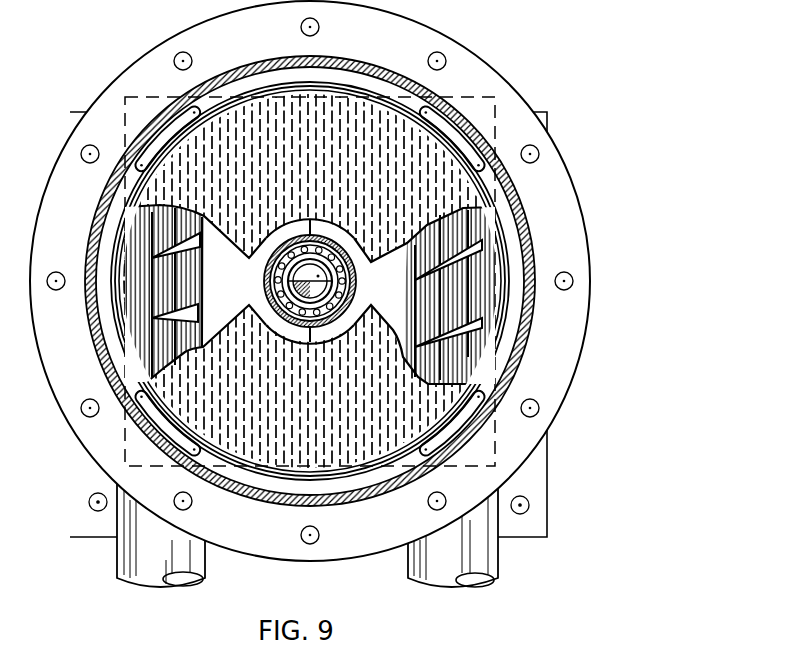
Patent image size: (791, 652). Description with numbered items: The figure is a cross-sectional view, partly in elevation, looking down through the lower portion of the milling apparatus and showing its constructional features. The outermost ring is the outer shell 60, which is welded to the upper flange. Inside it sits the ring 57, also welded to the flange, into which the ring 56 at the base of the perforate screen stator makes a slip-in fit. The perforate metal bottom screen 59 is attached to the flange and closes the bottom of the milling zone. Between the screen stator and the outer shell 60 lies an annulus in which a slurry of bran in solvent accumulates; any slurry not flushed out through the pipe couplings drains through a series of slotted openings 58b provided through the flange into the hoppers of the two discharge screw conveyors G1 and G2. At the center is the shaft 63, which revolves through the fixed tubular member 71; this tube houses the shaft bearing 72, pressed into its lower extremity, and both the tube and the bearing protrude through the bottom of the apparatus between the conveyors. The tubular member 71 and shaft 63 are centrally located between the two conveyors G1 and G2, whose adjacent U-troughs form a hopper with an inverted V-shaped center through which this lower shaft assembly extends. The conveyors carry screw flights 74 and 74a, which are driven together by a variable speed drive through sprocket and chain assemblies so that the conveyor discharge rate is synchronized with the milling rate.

The ring 56 is at (500, 345).
The ring 57 is at (507, 283).
The slotted openings 58b is at (460, 142).
The perforate metal bottom screen 59 is at (397, 337).
The outer shell 60 is at (527, 220).
The shaft 63 is at (281, 280).
The fixed tubular member 71 is at (350, 278).
The shaft bearing 72 is at (314, 236).
The screw flight 74 is at (198, 305).
The screw flight 74a is at (414, 286).
The screw conveyor G1 is at (498, 567).
The screw conveyor G2 is at (117, 566).